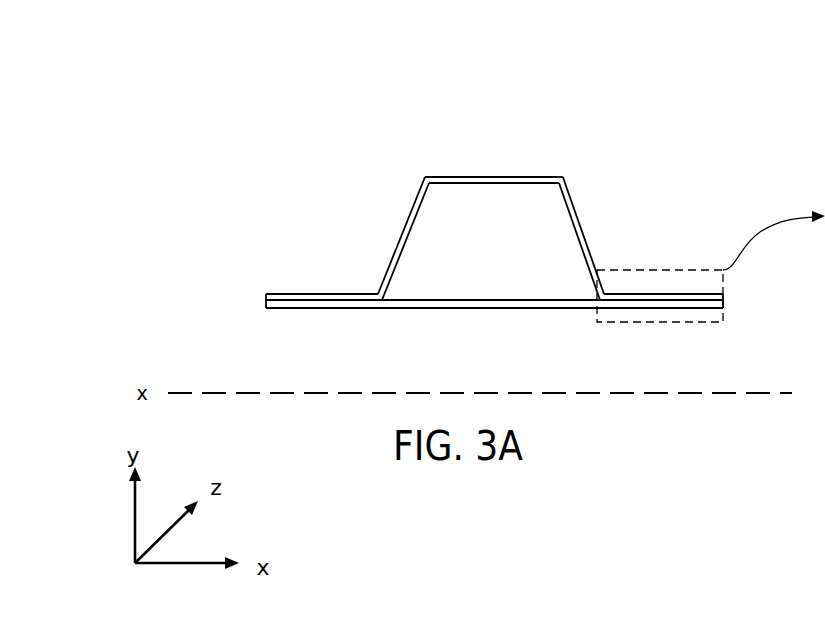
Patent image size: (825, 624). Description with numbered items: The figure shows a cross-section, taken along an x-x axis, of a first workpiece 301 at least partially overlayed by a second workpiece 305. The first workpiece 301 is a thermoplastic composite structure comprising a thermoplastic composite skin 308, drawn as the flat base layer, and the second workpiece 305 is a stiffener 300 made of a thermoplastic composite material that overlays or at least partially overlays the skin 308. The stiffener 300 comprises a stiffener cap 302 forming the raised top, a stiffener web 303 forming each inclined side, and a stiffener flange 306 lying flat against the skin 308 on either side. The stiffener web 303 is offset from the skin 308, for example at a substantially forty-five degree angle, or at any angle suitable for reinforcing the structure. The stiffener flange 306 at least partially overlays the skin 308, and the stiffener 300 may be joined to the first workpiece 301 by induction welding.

The stiffener 300 is at (499, 182).
The first workpiece 301 is at (463, 318).
The stiffener cap 302 is at (484, 178).
The stiffener web 303 is at (576, 213).
The second workpiece 305 is at (572, 166).
The stiffener flange 306 is at (275, 293).
The thermoplastic composite skin 308 is at (343, 302).